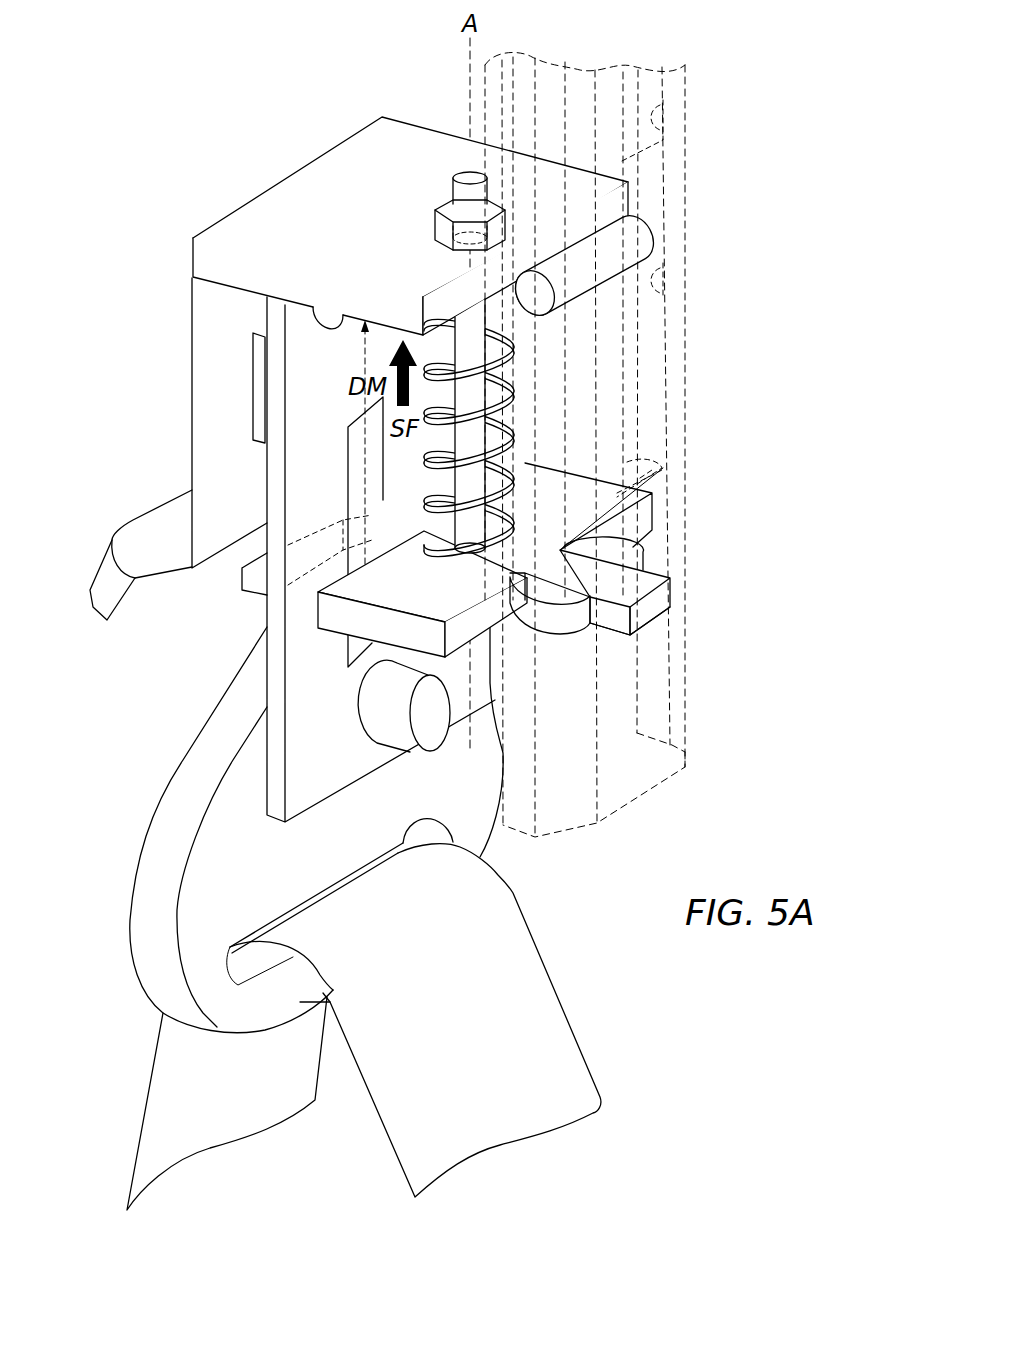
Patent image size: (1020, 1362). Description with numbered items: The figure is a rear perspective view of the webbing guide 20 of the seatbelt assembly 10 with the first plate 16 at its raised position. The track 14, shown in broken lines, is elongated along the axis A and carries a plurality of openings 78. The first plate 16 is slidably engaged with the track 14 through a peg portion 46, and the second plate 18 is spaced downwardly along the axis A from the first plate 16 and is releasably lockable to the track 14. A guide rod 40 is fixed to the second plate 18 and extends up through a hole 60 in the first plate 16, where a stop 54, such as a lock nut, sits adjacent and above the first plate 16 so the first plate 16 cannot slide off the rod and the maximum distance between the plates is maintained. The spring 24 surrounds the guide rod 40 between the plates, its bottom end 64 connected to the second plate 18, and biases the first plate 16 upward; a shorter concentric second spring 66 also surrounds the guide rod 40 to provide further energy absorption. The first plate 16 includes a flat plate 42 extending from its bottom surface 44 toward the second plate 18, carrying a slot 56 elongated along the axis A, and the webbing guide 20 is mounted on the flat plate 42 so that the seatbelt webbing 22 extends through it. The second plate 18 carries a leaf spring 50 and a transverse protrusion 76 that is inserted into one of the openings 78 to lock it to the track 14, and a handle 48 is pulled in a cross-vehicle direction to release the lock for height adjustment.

The seatbelt assembly 10 is at (146, 153).
The track 14 is at (690, 76).
The first plate 16 is at (368, 150).
The second plate 18 is at (604, 492).
The webbing guide 20 is at (173, 802).
The seatbelt webbing 22 is at (520, 1018).
The spring 24 is at (588, 428).
The guide rod 40 is at (470, 322).
The flat plate 42 is at (314, 380).
The bottom surface 44 is at (340, 320).
The peg portion 46 is at (642, 243).
The handle 48 is at (150, 530).
The leaf spring 50 is at (645, 545).
The stop 54 is at (447, 205).
The slot 56 is at (398, 490).
The hole 60 is at (433, 234).
The bottom end 64 is at (530, 508).
The second spring 66 is at (473, 408).
The protrusion 76 is at (638, 588).
The openings 78 is at (665, 117).